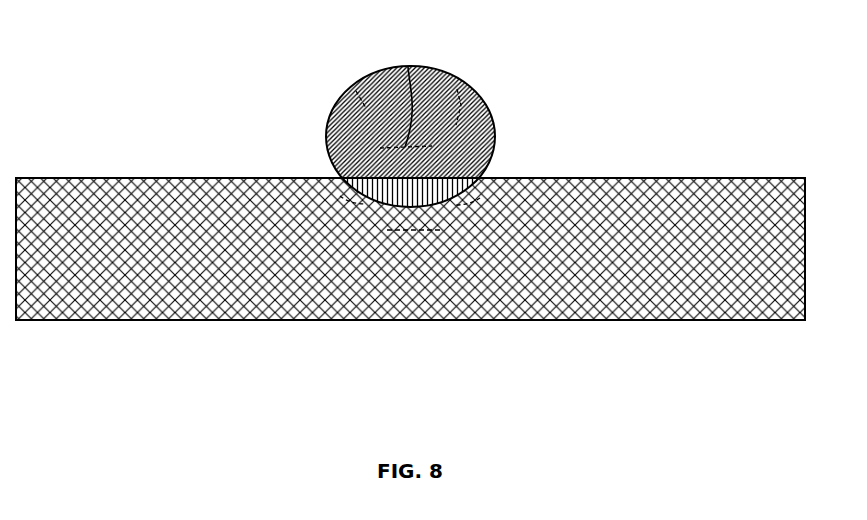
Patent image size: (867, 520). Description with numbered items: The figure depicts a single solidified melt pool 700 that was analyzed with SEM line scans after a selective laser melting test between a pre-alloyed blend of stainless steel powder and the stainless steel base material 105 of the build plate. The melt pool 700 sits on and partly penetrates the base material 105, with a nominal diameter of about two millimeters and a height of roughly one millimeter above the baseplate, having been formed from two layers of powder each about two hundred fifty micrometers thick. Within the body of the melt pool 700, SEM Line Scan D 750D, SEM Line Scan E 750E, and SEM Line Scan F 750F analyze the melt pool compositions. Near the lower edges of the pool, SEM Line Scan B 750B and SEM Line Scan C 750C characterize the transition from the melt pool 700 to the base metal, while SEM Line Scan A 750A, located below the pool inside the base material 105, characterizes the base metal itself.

The 316L base material 105 is at (762, 302).
The solidified melt pool 700 is at (332, 121).
The SEM Line Scan A 750A is at (405, 233).
The SEM Line Scan B 750B is at (363, 203).
The SEM Line Scan C 750C is at (460, 205).
The SEM Line Scan D 750D is at (353, 88).
The SEM Line Scan E 750E is at (461, 88).
The SEM Line Scan F 750F is at (408, 67).